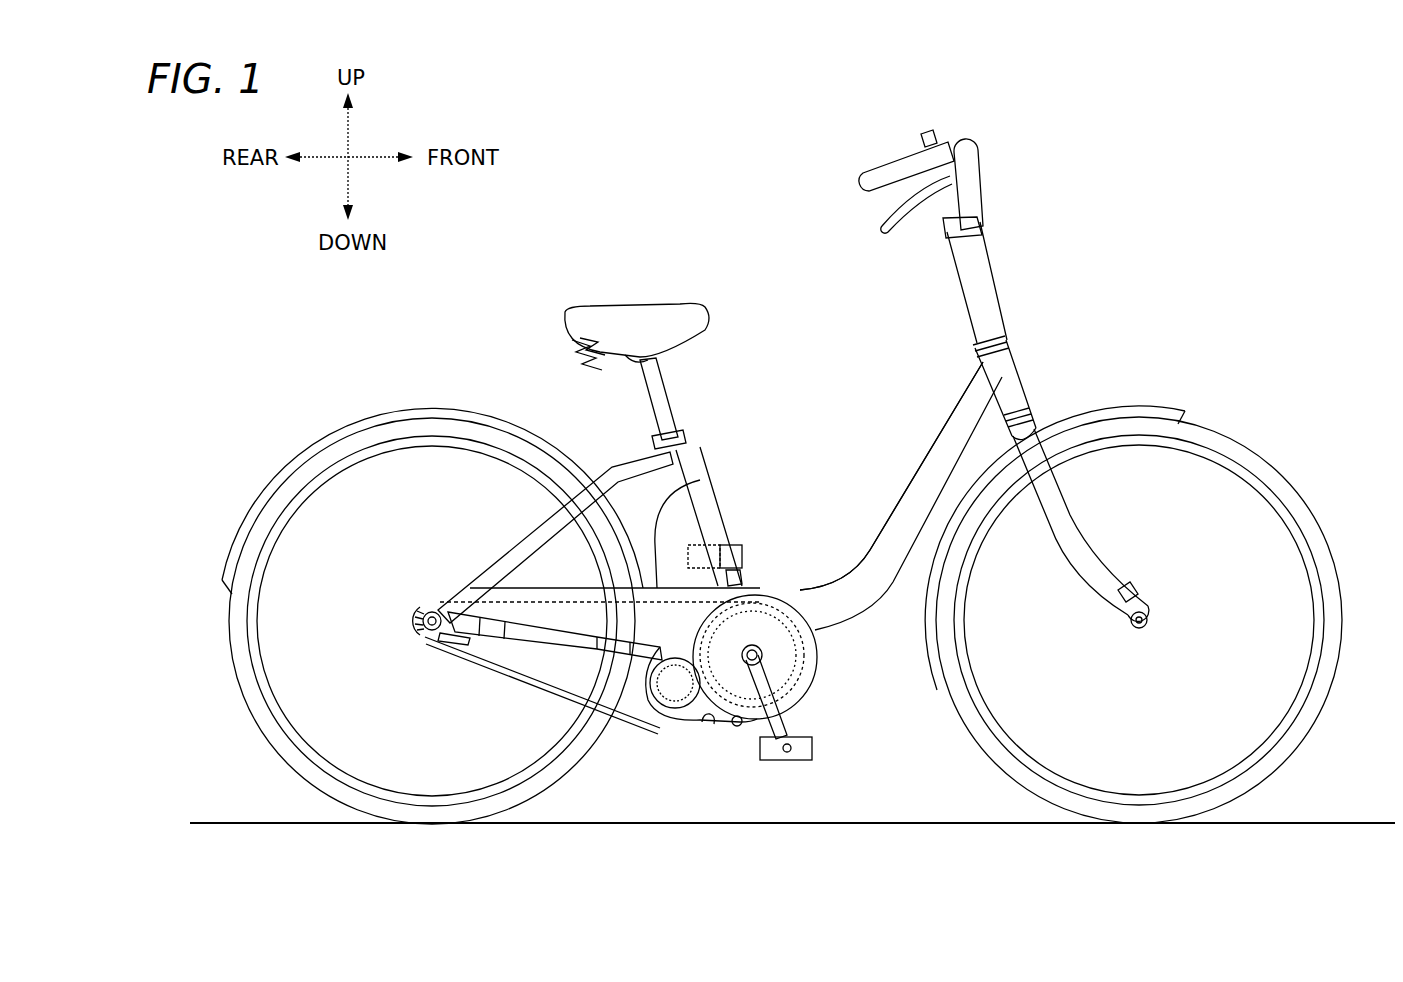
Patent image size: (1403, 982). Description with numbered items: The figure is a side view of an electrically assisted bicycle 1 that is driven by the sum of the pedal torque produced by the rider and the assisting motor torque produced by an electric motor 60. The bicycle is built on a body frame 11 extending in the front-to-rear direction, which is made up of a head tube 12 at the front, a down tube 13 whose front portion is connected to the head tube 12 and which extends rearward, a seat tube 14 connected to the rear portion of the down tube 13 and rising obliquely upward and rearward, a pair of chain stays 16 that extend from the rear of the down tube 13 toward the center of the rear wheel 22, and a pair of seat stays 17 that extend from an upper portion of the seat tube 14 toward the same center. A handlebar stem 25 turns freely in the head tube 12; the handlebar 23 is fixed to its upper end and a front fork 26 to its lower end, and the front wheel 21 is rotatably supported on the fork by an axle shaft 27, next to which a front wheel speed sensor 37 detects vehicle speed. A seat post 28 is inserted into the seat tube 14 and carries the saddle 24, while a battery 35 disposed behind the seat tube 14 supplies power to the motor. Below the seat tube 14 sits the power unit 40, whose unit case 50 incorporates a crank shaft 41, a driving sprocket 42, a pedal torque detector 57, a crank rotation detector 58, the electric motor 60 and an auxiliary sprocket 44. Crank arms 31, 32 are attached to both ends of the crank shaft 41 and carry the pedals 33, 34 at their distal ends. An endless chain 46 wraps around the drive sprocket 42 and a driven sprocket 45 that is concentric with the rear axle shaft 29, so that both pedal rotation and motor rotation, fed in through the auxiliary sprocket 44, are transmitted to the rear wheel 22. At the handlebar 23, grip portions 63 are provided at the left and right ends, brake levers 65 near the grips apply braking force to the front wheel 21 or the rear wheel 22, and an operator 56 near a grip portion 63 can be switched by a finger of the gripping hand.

The electrically assisted bicycle 1 is at (520, 268).
The body frame 11 is at (887, 463).
The head tube 12 is at (1008, 353).
The down tube 13 is at (950, 445).
The seat tube 14 is at (690, 472).
The chain stays 16 is at (540, 634).
The seat stays 17 is at (505, 540).
The front wheel 21 is at (1252, 462).
The rear wheel 22 is at (237, 627).
The handlebar 23 is at (975, 165).
The saddle 24 is at (652, 314).
The handlebar stem 25 is at (983, 290).
The front fork 26 is at (1062, 523).
The axle shaft 27 is at (1150, 620).
The seat post 28 is at (667, 407).
The rear axle shaft 29 is at (428, 632).
The crank arm 31 is at (782, 717).
The crank arm 32 is at (742, 582).
The pedal 33 is at (806, 748).
The pedal 34 is at (745, 548).
The battery 35 is at (673, 513).
The front wheel speed sensor 37 is at (1130, 590).
The power unit 40 is at (850, 686).
The crank shaft 41 is at (762, 655).
The driving sprocket 42 is at (683, 645).
The auxiliary sprocket 44 is at (672, 726).
The driven sprocket 45 is at (450, 644).
The chain 46 is at (488, 672).
The unit case 50 is at (822, 630).
The operator 56 is at (928, 130).
The pedal torque detector 57 is at (752, 710).
The crank rotation detector 58 is at (752, 710).
The electric motor 60 is at (696, 724).
The grip portions 63 is at (888, 170).
The brake levers 65 is at (910, 215).